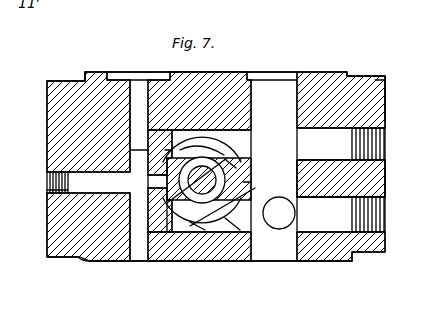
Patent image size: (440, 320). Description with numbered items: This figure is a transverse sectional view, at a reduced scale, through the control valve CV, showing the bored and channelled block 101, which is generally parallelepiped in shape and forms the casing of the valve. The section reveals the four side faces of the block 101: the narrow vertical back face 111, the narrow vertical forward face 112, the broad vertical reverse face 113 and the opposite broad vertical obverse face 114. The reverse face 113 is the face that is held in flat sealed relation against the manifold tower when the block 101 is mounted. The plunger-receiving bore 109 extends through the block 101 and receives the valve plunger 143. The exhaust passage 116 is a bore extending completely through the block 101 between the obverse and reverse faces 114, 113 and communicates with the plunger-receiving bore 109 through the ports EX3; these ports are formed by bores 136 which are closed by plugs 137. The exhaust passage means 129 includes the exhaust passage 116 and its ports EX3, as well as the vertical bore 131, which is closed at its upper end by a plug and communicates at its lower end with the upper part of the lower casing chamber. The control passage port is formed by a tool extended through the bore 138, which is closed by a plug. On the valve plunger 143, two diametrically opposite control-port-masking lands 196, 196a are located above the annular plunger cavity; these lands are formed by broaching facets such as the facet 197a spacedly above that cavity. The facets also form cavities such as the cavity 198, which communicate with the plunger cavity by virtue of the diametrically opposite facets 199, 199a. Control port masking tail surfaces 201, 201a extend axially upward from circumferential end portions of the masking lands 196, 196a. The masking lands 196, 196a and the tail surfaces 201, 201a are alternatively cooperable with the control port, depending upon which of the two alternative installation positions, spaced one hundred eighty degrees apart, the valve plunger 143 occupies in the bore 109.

The block 101 is at (335, 77).
The back face 111 is at (42, 88).
The forward face 112 is at (387, 100).
The reverse face 113 is at (326, 72).
The obverse face 114 is at (320, 263).
The exhaust passage 116 is at (270, 253).
The exhaust passage means 129 is at (303, 183).
The vertical bore 131 is at (285, 227).
The bores 136 is at (318, 155).
The plugs 137 is at (387, 147).
The bore 138 is at (84, 185).
The valve plunger 143 is at (230, 153).
The control-port-masking land 196 is at (175, 150).
The control-port-masking land 196a is at (233, 225).
The facet 197a is at (197, 228).
The cavity 198 is at (158, 158).
The facet 199 is at (62, 170).
The facet 199a is at (150, 238).
The control port masking tail surface 201 is at (167, 197).
The control port masking tail surface 201a is at (243, 182).
The plunger-receiving bore 109 is at (135, 150).
The exhaust port EX3 is at (226, 160).
The control valve CV is at (382, 74).